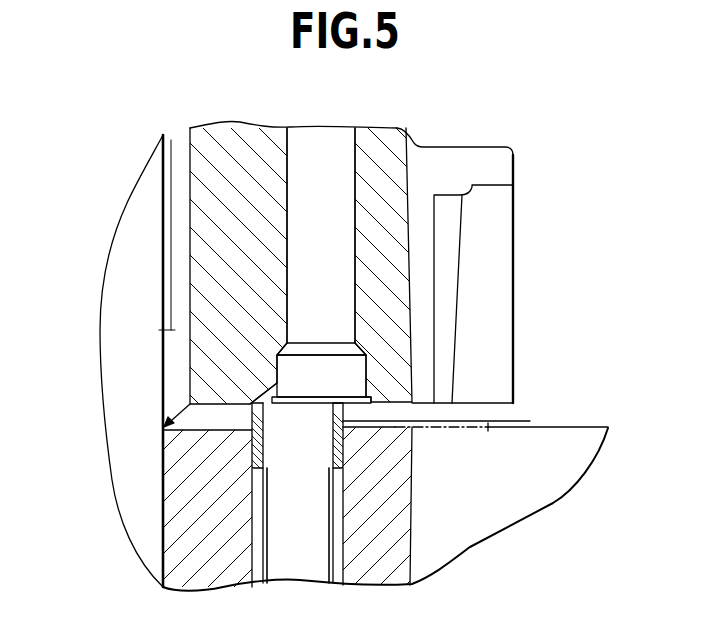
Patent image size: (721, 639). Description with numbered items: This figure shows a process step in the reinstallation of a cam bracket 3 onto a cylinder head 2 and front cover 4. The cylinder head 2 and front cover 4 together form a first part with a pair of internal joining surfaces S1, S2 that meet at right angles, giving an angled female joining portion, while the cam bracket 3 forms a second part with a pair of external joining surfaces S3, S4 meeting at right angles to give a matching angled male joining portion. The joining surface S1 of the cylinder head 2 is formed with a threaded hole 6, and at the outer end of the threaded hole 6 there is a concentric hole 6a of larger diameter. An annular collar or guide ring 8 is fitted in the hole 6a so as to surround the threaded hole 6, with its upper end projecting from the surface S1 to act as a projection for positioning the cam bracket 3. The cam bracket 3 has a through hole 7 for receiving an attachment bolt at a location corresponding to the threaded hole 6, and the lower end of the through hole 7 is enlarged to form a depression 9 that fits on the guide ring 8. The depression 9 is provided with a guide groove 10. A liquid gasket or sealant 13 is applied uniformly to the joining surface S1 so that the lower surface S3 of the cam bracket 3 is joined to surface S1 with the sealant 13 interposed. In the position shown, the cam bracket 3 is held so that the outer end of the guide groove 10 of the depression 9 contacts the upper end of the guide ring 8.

The cylinder head 2 is at (557, 472).
The cam bracket 3 is at (423, 147).
The front cover 4 is at (117, 272).
The threaded hole 6 is at (245, 511).
The concentric hole 6a is at (256, 445).
The through hole 7 is at (342, 233).
The guide ring 8 is at (353, 420).
The depression 9 is at (353, 377).
The guide groove 10 is at (268, 390).
The sealant 13 is at (170, 300).
The internal joining surface S1 is at (553, 429).
The internal joining surface S2 is at (172, 170).
The external joining surface S3 is at (490, 409).
The external joining surface S4 is at (190, 197).